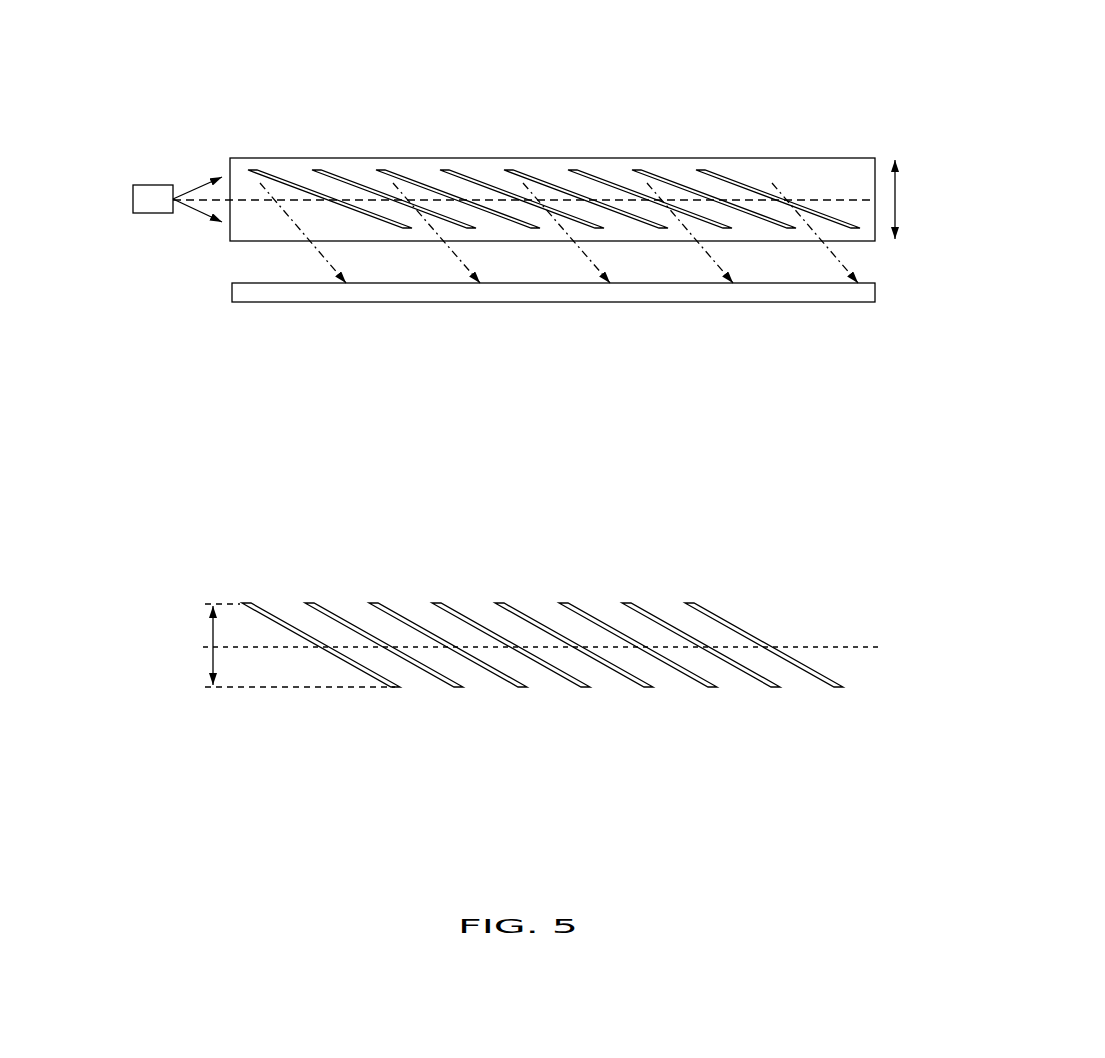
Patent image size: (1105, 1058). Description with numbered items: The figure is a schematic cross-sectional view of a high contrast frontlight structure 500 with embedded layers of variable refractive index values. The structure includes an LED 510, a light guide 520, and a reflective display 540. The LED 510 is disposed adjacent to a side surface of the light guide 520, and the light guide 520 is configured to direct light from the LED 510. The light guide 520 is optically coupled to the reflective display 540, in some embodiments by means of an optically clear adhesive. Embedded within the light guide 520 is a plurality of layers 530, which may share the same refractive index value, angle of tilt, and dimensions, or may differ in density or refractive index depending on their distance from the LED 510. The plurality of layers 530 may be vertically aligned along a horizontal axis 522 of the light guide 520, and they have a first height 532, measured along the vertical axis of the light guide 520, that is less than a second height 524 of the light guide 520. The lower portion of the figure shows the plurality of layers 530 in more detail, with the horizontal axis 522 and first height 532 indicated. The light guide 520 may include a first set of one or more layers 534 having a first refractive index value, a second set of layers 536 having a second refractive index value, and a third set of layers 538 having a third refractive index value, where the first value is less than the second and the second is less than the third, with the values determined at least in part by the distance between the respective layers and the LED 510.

The high contrast frontlight structure 500 is at (1003, 65).
The LED 510 is at (133, 197).
The light guide 520 is at (750, 158).
The horizontal axis 522 is at (832, 200).
The second height 524 is at (897, 200).
The plurality of layers 530 is at (487, 172).
The first height 532 is at (210, 633).
The first set of one or more layers 534 is at (368, 582).
The second set of one or more layers 536 is at (530, 573).
The third set of one or more layers 538 is at (695, 573).
The reflective display 540 is at (877, 283).